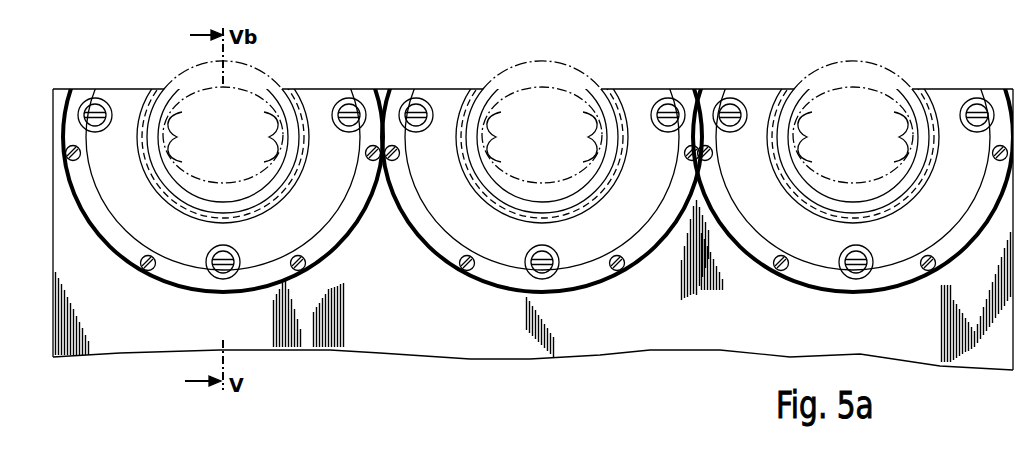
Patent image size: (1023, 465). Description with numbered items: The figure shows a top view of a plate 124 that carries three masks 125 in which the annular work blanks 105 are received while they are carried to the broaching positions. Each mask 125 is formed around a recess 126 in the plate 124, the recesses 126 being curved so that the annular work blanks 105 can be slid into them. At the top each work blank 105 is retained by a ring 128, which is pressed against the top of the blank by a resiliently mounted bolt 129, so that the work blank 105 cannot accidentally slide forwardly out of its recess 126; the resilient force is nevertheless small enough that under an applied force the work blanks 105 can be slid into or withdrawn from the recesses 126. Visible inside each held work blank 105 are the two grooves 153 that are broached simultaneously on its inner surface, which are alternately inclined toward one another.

The work blank 105 is at (180, 73).
The plate 124 is at (448, 342).
The mask 125 is at (721, 80).
The recess 126 is at (288, 95).
The ring 128 is at (297, 177).
The resiliently mounted bolt 129 is at (95, 132).
The groove 153 is at (180, 128).